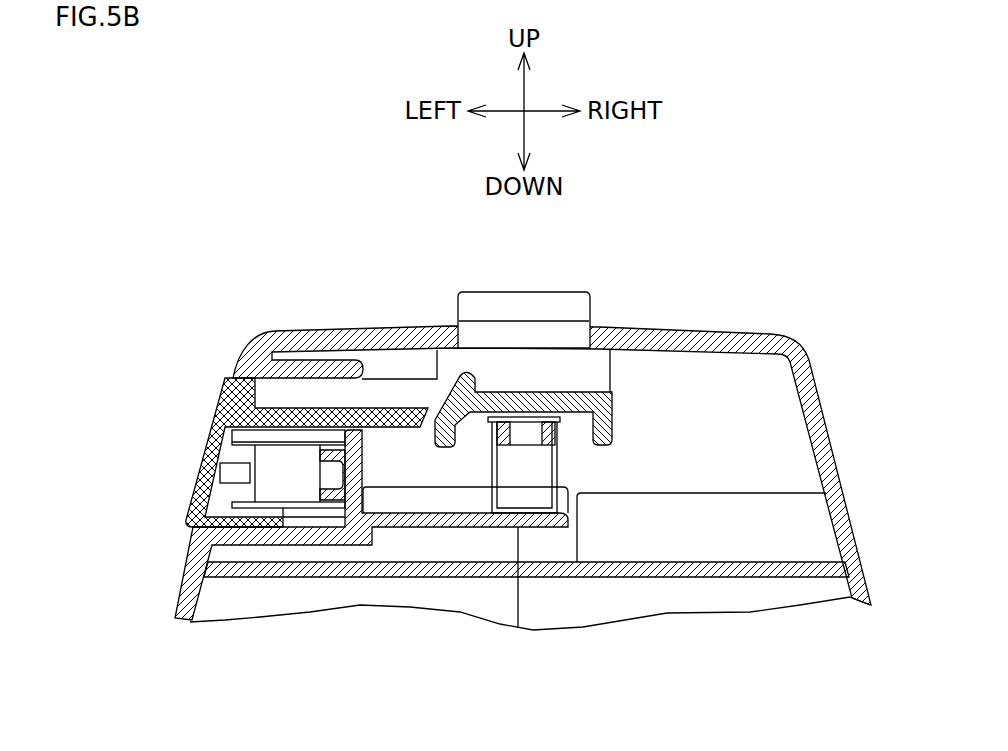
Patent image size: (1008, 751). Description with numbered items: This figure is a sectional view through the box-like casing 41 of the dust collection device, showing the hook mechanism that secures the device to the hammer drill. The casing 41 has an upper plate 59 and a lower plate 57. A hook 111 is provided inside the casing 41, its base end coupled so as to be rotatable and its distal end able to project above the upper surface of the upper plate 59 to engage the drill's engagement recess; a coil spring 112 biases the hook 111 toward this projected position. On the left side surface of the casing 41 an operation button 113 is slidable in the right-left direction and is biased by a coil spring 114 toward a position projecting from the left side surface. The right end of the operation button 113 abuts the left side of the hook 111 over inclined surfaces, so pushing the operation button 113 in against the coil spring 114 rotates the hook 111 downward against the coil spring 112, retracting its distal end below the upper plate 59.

The casing 41 is at (756, 316).
The upper plate 59 is at (675, 338).
The lower plate 57 is at (734, 566).
The hook 111 is at (555, 305).
The coil spring 112 is at (557, 465).
The operation button 113 is at (202, 462).
The coil spring 114 is at (302, 508).